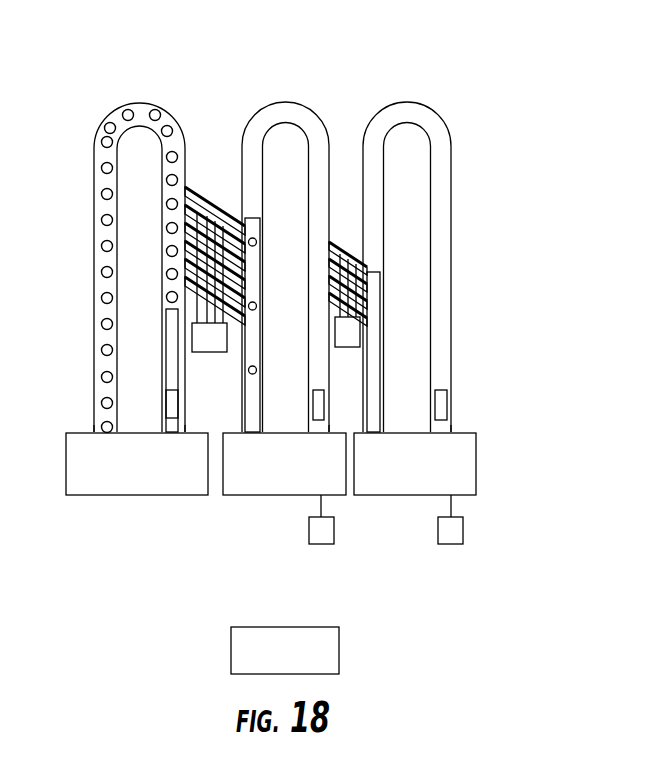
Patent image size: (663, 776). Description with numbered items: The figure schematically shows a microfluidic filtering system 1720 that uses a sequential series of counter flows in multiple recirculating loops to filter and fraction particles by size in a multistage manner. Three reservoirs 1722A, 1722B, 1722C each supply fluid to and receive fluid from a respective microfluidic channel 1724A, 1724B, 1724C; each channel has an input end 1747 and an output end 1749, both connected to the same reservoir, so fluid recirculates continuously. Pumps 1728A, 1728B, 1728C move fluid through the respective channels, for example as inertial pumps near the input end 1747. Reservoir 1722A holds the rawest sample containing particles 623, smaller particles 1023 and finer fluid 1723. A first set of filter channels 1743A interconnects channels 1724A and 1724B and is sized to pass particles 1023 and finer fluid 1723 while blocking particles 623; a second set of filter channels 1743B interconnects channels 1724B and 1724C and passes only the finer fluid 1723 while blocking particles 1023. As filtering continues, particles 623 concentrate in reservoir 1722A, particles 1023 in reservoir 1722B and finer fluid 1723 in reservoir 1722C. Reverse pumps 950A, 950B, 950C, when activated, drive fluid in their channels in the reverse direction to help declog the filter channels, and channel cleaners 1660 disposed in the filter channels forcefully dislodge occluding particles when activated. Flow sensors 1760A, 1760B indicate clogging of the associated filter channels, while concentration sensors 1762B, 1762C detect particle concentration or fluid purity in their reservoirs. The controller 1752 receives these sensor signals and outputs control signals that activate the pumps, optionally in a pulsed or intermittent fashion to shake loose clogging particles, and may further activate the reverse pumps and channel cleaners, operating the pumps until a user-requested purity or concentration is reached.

The microfluidic filtering system 1720 is at (74, 100).
The microfluidic channel 1724A is at (108, 112).
The microfluidic channel 1724B is at (290, 102).
The microfluidic channel 1724C is at (427, 104).
The particles 623 is at (98, 275).
The output end 1749 is at (97, 432).
The reverse pump 950A is at (166, 368).
The pump 1728A is at (166, 398).
The filter channels 1743A is at (242, 218).
The channel cleaners 1660 is at (197, 188).
The flow sensor 1760A is at (212, 352).
The reverse pump 950B is at (257, 386).
The particles 1023 is at (258, 242).
The pump 1728B is at (313, 402).
The filter channels 1743B is at (347, 243).
The finer fluid 1723 is at (375, 358).
The flow sensor 1760B is at (360, 345).
The reverse pump 950C is at (380, 404).
The pump 1728C is at (380, 420).
The input end 1747 is at (452, 431).
The reservoir 1722A is at (95, 497).
The reservoir 1722B is at (243, 497).
The reservoir 1722C is at (410, 497).
The concentration sensor 1762B is at (321, 546).
The concentration sensor 1762C is at (463, 530).
The controller 1752 is at (339, 650).